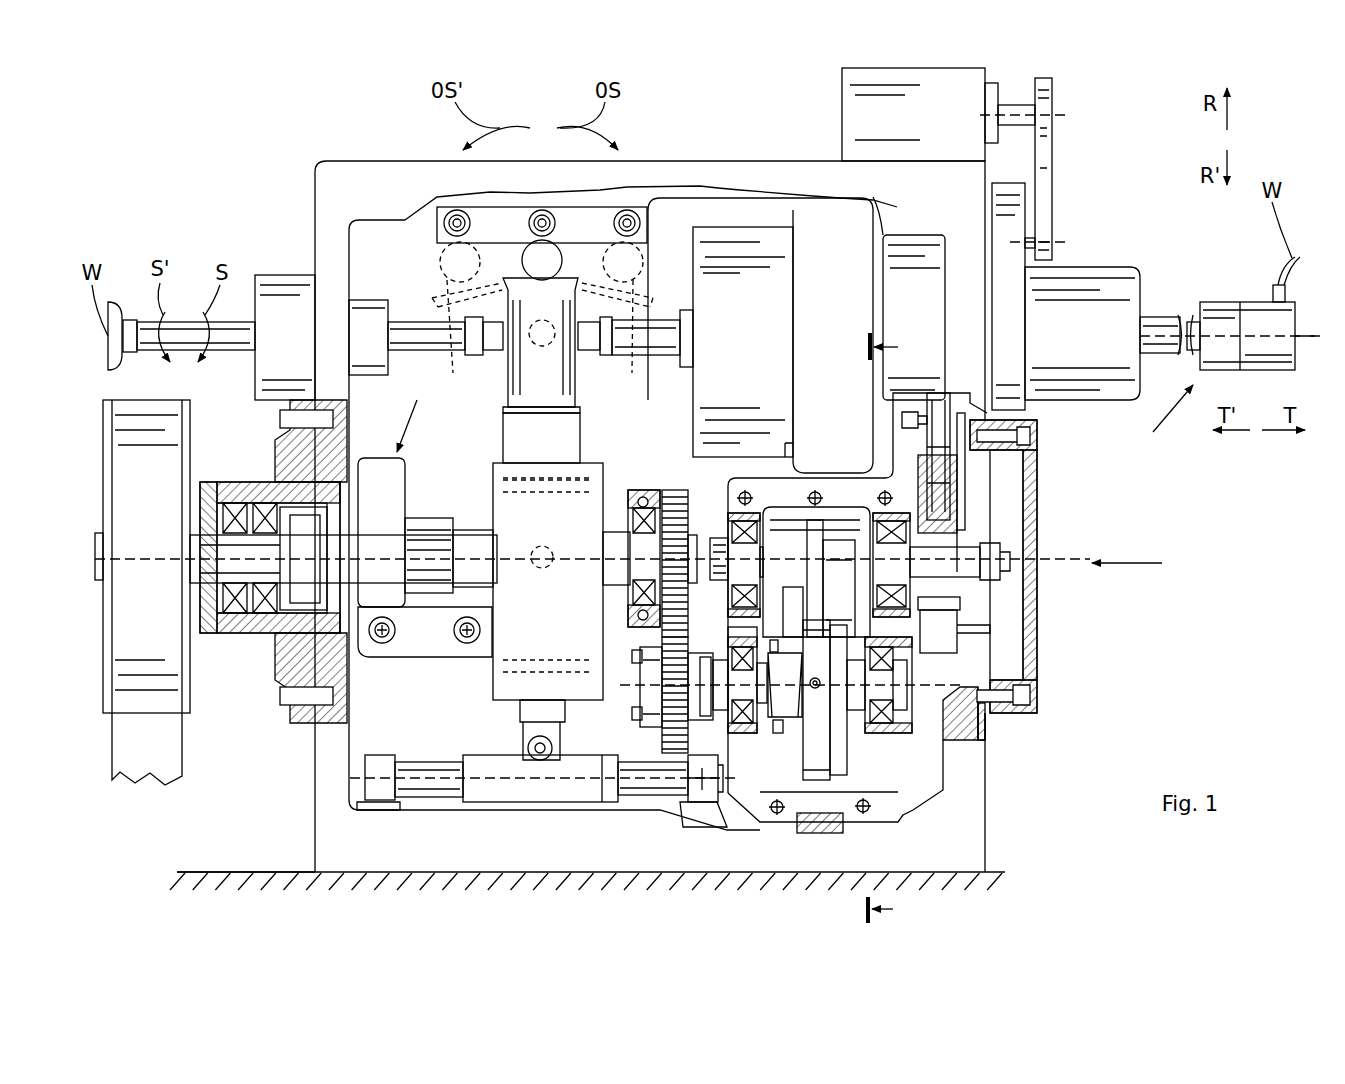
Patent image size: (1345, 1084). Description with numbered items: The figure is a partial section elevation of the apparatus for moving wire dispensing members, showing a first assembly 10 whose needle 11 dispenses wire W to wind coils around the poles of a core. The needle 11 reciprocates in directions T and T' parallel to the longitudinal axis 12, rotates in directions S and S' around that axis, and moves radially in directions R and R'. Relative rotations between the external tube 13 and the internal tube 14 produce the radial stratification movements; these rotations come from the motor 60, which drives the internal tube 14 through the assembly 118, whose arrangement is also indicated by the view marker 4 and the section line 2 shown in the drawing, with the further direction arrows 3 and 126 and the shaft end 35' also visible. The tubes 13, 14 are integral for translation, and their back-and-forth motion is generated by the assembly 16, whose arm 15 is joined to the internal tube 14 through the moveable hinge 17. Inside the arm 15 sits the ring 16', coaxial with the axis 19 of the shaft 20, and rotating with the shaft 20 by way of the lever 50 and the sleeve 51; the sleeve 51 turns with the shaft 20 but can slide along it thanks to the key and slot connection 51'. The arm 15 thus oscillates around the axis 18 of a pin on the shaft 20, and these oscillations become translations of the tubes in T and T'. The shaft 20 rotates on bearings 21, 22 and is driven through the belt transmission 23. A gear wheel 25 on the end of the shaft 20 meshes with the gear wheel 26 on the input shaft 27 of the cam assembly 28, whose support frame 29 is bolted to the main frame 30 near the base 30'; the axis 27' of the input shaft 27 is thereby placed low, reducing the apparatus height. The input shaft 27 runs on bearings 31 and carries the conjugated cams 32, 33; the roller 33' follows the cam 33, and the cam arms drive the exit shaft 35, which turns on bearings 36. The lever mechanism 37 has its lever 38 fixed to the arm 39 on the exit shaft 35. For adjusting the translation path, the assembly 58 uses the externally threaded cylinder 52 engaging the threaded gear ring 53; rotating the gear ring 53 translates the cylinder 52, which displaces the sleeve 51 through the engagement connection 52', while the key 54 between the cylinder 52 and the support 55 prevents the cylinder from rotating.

The motor / section line 2 is at (895, 347).
The direction arrow 3 is at (1130, 563).
The encoder disc 4 is at (1165, 77).
The first assembly 10 is at (1265, 345).
The needle 11 is at (1273, 290).
The longitudinal axis 12 is at (1305, 336).
The external tube 13 is at (1160, 318).
The internal tube 14 is at (412, 322).
The arm 15 is at (537, 377).
The assembly 16 is at (519, 586).
The ring 16' is at (529, 455).
The moveable hinge 17 is at (548, 345).
The axis 18 is at (548, 570).
The axis 19 is at (148, 557).
The shaft 20 is at (617, 545).
The bearing 21 is at (228, 648).
The bearing 22 is at (640, 605).
The belt transmission 23 is at (160, 770).
The gear wheel 25 is at (675, 500).
The gear wheel 26 is at (645, 700).
The input shaft 27 is at (709, 663).
The axis 27' is at (691, 696).
The cam assembly 28 is at (743, 820).
The support frame 29 is at (887, 793).
The main frame 30 is at (1013, 713).
The base 30' is at (246, 843).
The bearing 31 is at (760, 733).
The cam 32 is at (800, 735).
The cam 33 is at (867, 747).
The roller 33' is at (816, 559).
The exit shaft 35 is at (753, 531).
The shaft end nut 35' is at (1004, 549).
The bearing 36 is at (735, 520).
The lever mechanism 37 is at (1052, 470).
The lever 38 is at (1000, 500).
The arm 39 is at (975, 628).
The lever 50 is at (428, 650).
The sleeve 51 is at (381, 502).
The key and slot connection 51' is at (449, 534).
The cylinder 52 is at (270, 520).
The engagement connection 52' is at (374, 601).
The gear ring 53 is at (273, 650).
The key 54 is at (263, 505).
The support 55 is at (208, 640).
The assembly 58 is at (416, 414).
The motor 60 is at (855, 113).
The assembly 118 is at (718, 160).
The direction arrow 126 is at (1163, 435).